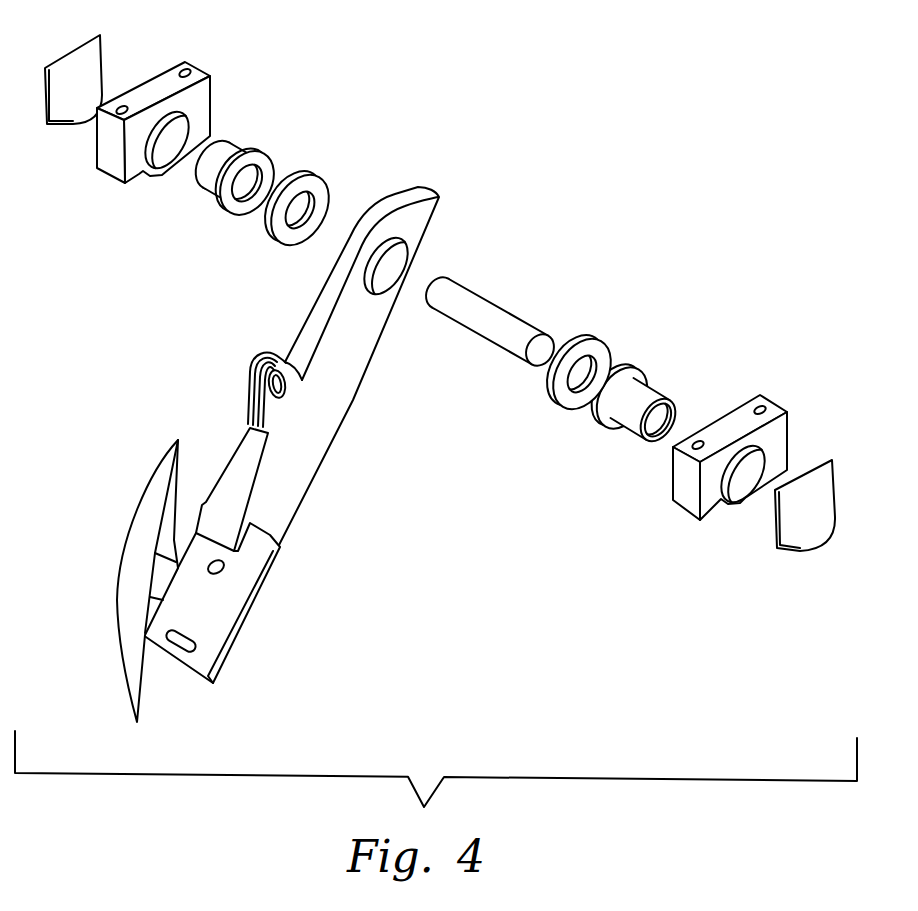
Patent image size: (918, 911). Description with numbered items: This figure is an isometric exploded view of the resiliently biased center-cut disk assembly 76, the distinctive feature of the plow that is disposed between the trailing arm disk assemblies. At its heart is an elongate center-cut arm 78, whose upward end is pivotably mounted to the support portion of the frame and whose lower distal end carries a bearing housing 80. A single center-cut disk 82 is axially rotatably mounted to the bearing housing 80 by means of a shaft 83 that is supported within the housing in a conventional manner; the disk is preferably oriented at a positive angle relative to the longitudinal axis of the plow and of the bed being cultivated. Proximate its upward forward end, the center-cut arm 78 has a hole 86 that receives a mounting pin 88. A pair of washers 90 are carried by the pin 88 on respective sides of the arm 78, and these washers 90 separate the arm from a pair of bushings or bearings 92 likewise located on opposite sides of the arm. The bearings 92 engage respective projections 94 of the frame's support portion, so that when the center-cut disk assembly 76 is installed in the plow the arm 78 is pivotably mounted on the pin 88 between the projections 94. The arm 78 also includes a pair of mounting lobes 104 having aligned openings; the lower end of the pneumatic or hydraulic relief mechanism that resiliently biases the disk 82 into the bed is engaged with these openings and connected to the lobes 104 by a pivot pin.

The center-cut disk assembly 76 is at (273, 565).
The center-cut arm 78 is at (373, 366).
The bearing housing 80 is at (262, 573).
The center-cut disk 82 is at (116, 552).
The shaft 83 is at (189, 527).
The hole 86 is at (391, 257).
The mounting pin 88 is at (526, 321).
The washers 90 is at (300, 178).
The bushings or bearings 92 is at (228, 222).
The projections 94 is at (193, 63).
The mounting lobes 104 is at (253, 358).